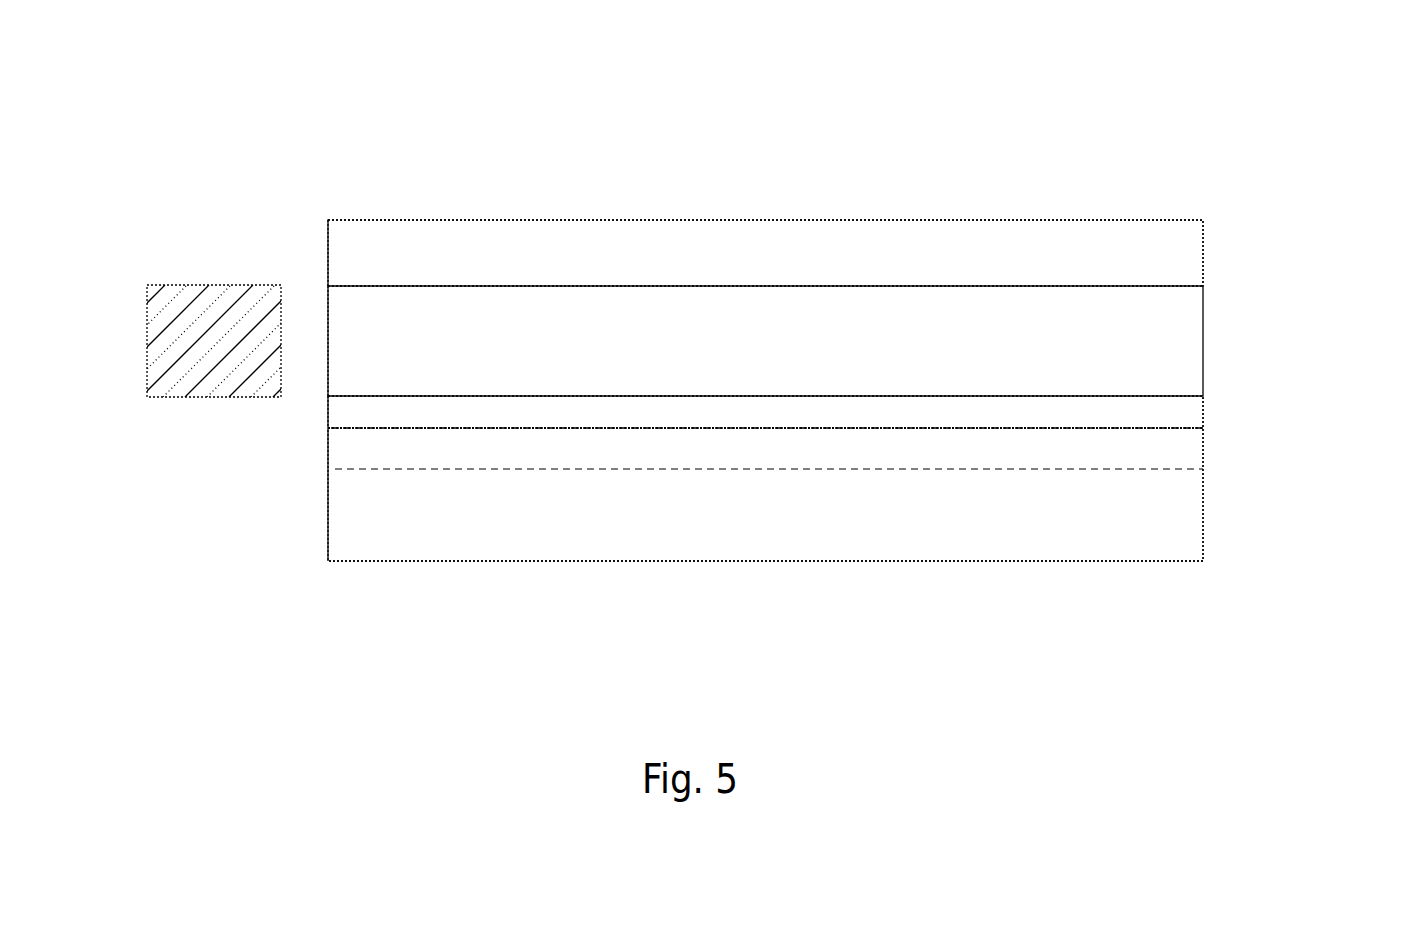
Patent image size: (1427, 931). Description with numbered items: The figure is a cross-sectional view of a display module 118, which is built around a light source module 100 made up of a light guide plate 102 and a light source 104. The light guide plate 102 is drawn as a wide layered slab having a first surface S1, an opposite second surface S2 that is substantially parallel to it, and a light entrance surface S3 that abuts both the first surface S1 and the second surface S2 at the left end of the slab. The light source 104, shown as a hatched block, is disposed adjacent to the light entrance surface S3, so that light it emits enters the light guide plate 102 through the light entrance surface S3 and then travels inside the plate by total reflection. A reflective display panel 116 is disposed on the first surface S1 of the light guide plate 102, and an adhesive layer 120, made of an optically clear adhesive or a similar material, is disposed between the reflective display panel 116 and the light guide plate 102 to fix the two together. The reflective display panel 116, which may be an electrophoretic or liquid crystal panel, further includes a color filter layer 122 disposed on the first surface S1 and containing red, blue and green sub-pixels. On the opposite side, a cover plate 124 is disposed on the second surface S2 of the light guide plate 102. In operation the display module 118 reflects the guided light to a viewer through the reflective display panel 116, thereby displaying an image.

The display module 118 is at (150, 117).
The light source module 100 is at (1340, 350).
The cover plate 124 is at (1192, 255).
The light guide plate 102 is at (1192, 342).
The adhesive layer 120 is at (1192, 410).
The reflective display panel 116 is at (1215, 428).
The color filter layer 122 is at (340, 450).
The light source 104 is at (148, 335).
The first surface S1 is at (524, 420).
The second surface S2 is at (452, 265).
The light entrance surface S3 is at (318, 300).